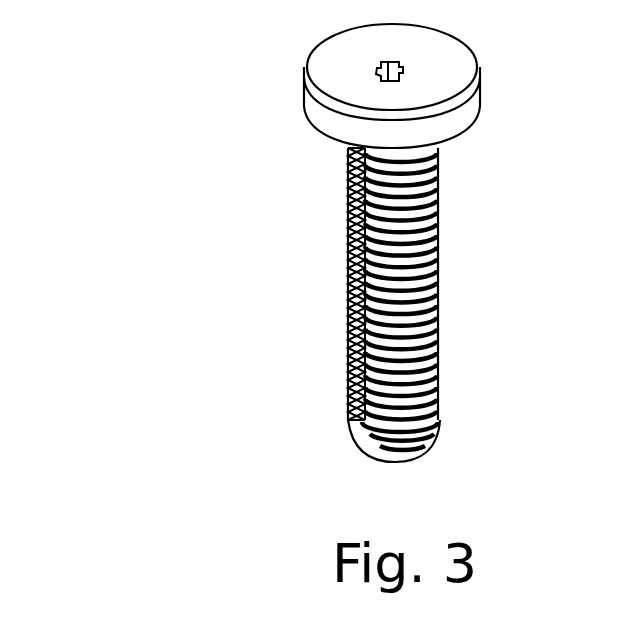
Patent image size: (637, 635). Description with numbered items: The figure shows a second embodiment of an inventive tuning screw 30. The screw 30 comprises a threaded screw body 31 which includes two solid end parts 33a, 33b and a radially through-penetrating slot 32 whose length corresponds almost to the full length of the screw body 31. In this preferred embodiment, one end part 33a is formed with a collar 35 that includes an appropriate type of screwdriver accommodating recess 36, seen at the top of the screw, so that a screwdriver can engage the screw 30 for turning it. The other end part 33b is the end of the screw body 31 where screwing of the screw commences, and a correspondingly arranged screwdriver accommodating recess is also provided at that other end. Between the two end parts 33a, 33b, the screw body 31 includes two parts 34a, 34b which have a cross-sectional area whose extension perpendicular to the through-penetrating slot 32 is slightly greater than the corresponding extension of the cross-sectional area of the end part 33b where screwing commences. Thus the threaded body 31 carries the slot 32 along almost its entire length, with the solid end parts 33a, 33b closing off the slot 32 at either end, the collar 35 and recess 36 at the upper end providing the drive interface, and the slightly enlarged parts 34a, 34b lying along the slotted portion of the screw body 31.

The tuning screw 30 is at (91, 109).
The threaded screw body 31 is at (447, 168).
The through-penetrating slot 32 is at (349, 288).
The end part 33a is at (365, 157).
The end part 33b is at (370, 455).
The part of the screw body 34a is at (446, 237).
The part of the screw body 34b is at (446, 341).
The collar 35 is at (442, 81).
The screwdriver accommodating recess 36 is at (378, 65).